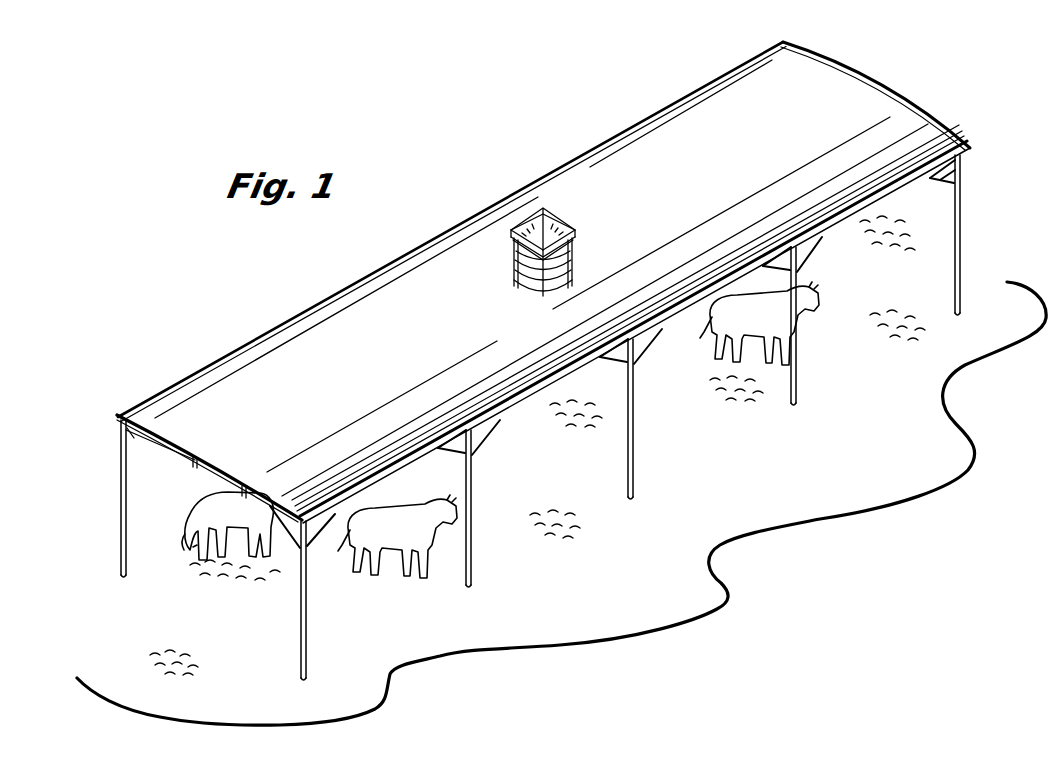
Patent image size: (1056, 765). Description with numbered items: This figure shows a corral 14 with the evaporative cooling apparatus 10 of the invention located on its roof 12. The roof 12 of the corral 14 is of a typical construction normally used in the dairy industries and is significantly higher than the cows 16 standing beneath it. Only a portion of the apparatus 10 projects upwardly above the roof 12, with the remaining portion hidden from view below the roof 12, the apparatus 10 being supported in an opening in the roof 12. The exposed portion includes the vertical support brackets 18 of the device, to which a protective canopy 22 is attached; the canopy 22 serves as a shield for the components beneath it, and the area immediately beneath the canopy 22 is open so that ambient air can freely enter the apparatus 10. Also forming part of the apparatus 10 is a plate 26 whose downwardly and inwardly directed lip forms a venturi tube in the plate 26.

The apparatus 10 is at (550, 238).
The roof 12 is at (709, 86).
The corral 14 is at (890, 257).
The cows 16 is at (210, 503).
The vertical support brackets 18 is at (530, 292).
The protective canopy 22 is at (568, 200).
The plate 26 is at (578, 242).